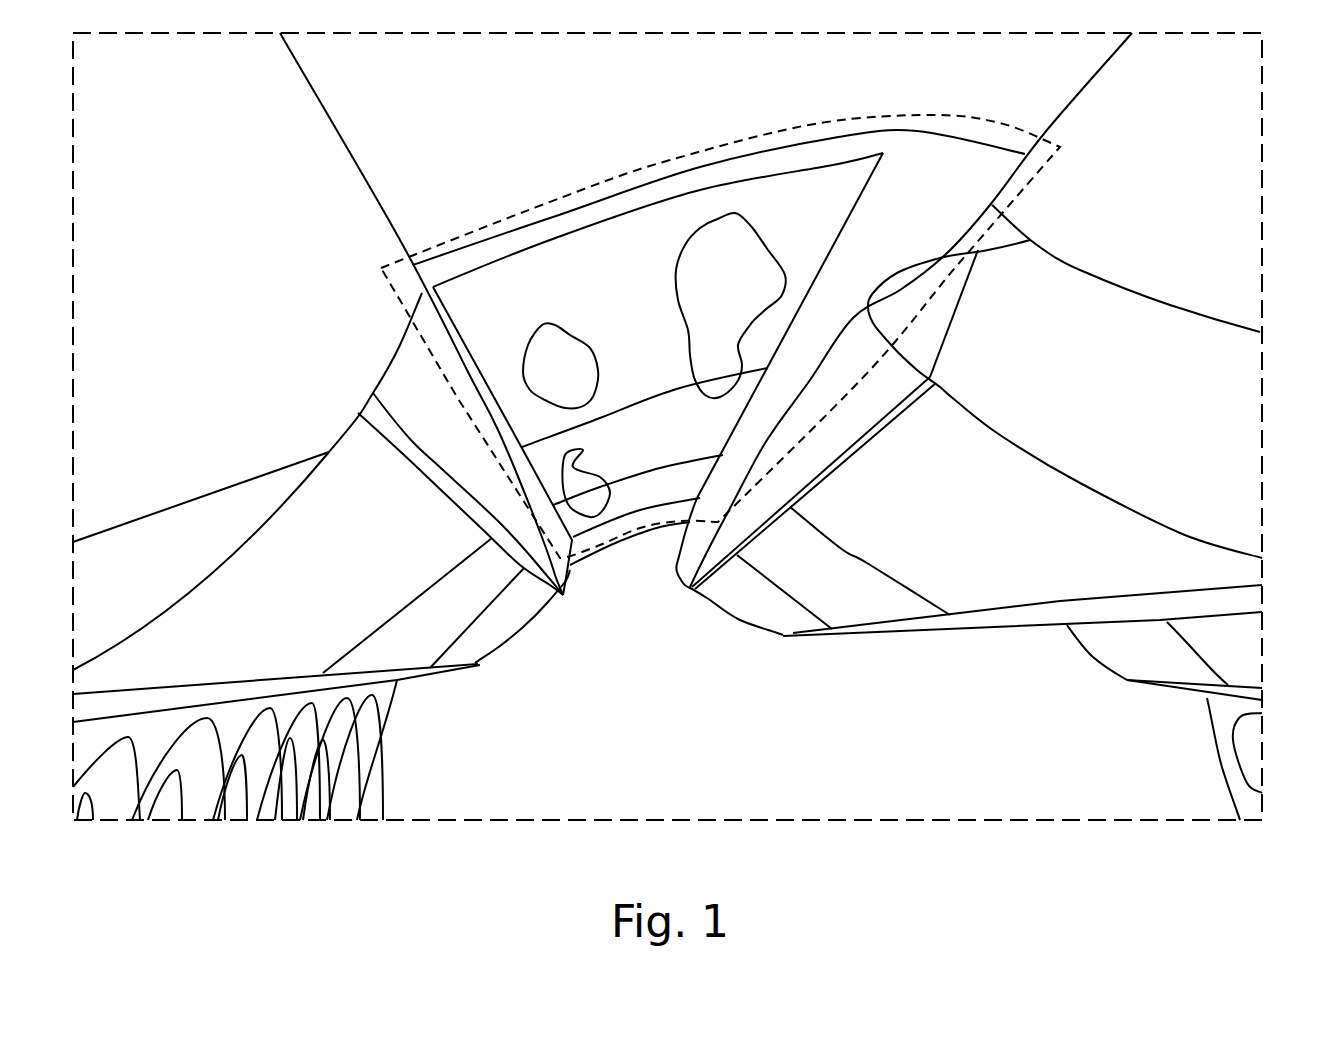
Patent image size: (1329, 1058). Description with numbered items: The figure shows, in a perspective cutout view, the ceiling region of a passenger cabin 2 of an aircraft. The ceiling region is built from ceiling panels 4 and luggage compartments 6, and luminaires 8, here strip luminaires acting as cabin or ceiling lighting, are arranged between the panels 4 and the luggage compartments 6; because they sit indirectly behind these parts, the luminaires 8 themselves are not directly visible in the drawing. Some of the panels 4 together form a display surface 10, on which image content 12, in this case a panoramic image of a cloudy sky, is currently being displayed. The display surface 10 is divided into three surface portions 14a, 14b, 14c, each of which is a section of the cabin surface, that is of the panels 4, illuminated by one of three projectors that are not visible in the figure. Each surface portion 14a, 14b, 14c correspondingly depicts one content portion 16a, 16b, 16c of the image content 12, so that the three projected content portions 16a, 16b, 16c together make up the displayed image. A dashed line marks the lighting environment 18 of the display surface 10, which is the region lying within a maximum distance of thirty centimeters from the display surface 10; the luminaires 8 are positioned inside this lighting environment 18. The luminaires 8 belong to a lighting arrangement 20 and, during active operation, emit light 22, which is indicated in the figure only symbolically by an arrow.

The passenger cabin 2 is at (1172, 207).
The ceiling panels 4 is at (1093, 205).
The luggage compartments 6 is at (667, 636).
The luminaires 8 is at (850, 320).
The display surface 10 is at (848, 153).
The image content 12 is at (770, 190).
The first surface portion 14a is at (838, 240).
The second surface portion 14b is at (535, 475).
The third surface portion 14c is at (620, 520).
The first content portion 16a is at (645, 378).
The second content portion 16b is at (638, 464).
The third content portion 16c is at (630, 521).
The lighting environment 18 is at (397, 298).
The lighting arrangement 20 is at (273, 152).
The light 22 is at (472, 378).